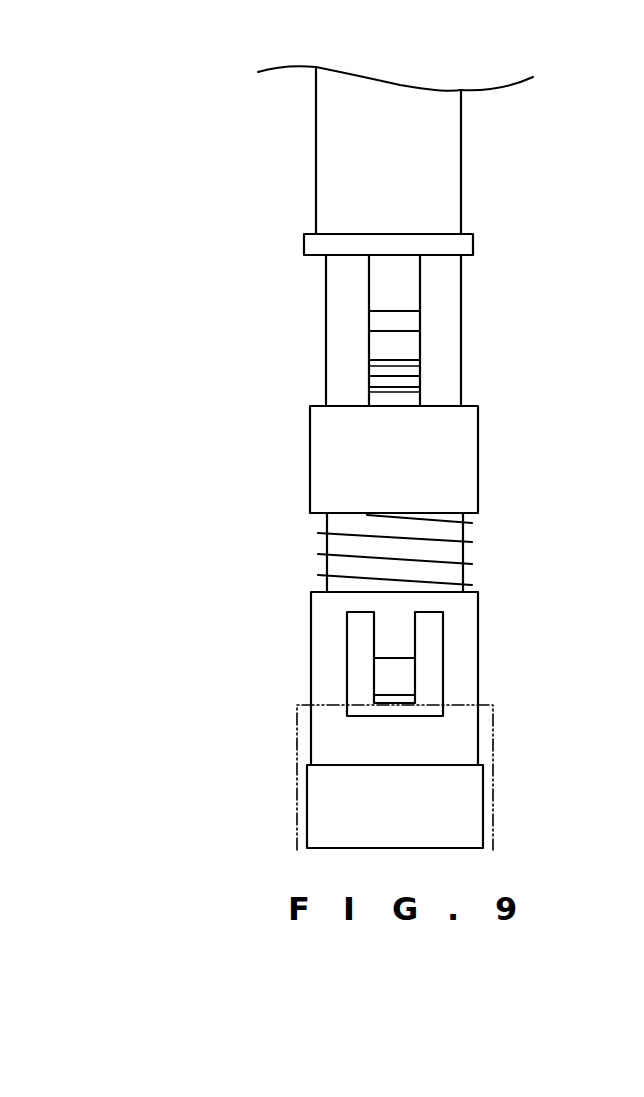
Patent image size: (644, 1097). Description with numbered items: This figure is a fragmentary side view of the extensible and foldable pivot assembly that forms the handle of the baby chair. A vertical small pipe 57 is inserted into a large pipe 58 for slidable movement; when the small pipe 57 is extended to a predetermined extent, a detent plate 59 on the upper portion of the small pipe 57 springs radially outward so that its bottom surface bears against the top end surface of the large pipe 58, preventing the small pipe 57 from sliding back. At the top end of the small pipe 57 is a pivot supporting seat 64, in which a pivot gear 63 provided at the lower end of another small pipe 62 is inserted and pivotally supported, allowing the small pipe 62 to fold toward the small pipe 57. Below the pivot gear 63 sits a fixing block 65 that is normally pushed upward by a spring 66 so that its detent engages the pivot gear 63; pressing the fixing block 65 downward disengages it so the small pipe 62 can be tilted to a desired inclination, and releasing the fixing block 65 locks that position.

The small pipe 62 is at (453, 175).
The pivot gear 63 is at (400, 302).
The pivot supporting seat 64 is at (447, 333).
The fixing block 65 is at (347, 443).
The spring 66 is at (467, 543).
The small pipe 57 is at (465, 660).
The detent plate 59 is at (398, 682).
The large pipe 58 is at (297, 730).